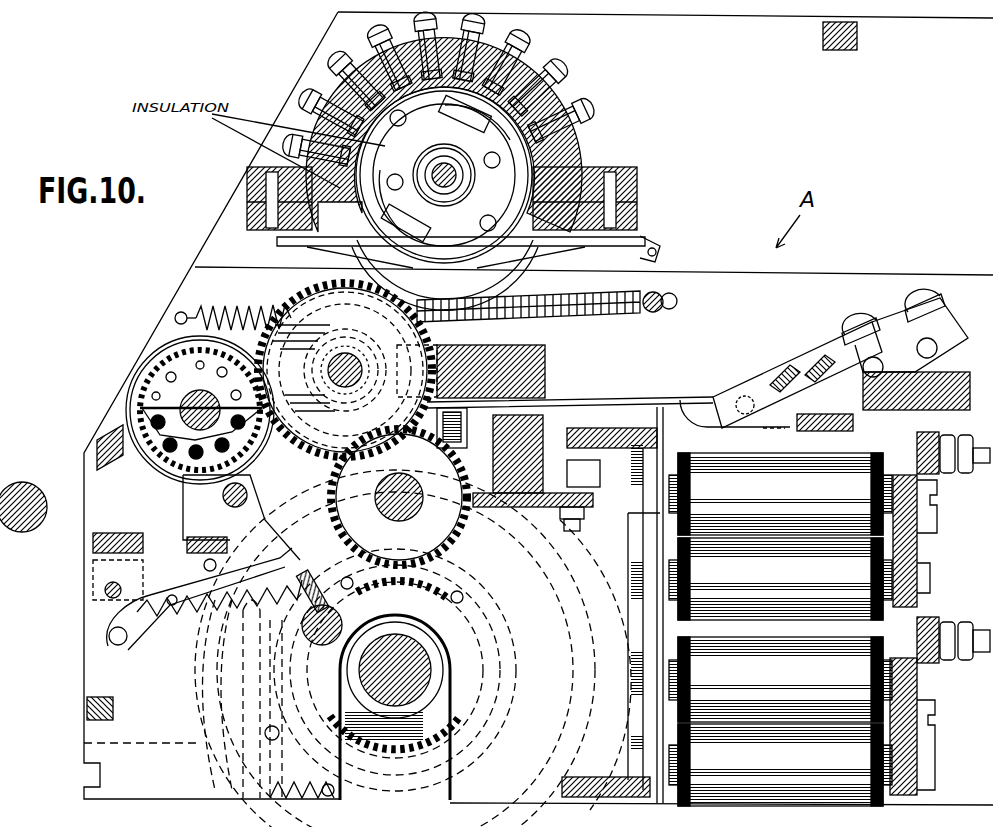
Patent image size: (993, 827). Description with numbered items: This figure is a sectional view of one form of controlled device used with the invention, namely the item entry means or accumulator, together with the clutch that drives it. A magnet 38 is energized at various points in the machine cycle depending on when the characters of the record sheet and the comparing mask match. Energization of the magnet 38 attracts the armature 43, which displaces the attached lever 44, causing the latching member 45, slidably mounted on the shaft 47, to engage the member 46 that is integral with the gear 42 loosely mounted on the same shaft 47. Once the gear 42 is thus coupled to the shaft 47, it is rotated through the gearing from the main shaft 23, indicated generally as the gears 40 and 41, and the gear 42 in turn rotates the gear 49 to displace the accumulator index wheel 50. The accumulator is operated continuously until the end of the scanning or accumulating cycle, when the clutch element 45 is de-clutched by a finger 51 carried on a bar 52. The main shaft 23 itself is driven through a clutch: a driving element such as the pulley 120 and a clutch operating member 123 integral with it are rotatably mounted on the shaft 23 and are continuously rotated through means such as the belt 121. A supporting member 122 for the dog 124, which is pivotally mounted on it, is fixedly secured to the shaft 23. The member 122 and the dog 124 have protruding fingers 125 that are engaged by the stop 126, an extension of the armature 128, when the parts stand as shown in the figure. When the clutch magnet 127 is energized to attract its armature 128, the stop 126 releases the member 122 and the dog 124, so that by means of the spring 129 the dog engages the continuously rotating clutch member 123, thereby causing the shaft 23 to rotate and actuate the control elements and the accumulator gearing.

The main shaft 23 is at (397, 685).
The magnet 38 is at (780, 629).
The gear 40 is at (470, 447).
The gear 41 is at (452, 535).
The gear 42 is at (432, 334).
The armature 43 is at (662, 538).
The lever 44 is at (552, 400).
The latching member 45 is at (340, 379).
The member 46 is at (335, 345).
The shaft 47 is at (346, 387).
The gear 49 is at (170, 368).
The accumulator index wheel 50 is at (150, 356).
The finger 51 is at (787, 432).
The bar 52 is at (833, 420).
The pulley 120 is at (570, 590).
The belt 121 is at (612, 665).
The supporting member 122 is at (512, 697).
The clutch operating member 123 is at (487, 728).
The dog 124 is at (333, 578).
The protruding fingers 125 is at (275, 648).
The stop 126 is at (237, 640).
The clutch magnet 127 is at (163, 745).
The armature 128 is at (227, 787).
The spring 129 is at (445, 585).